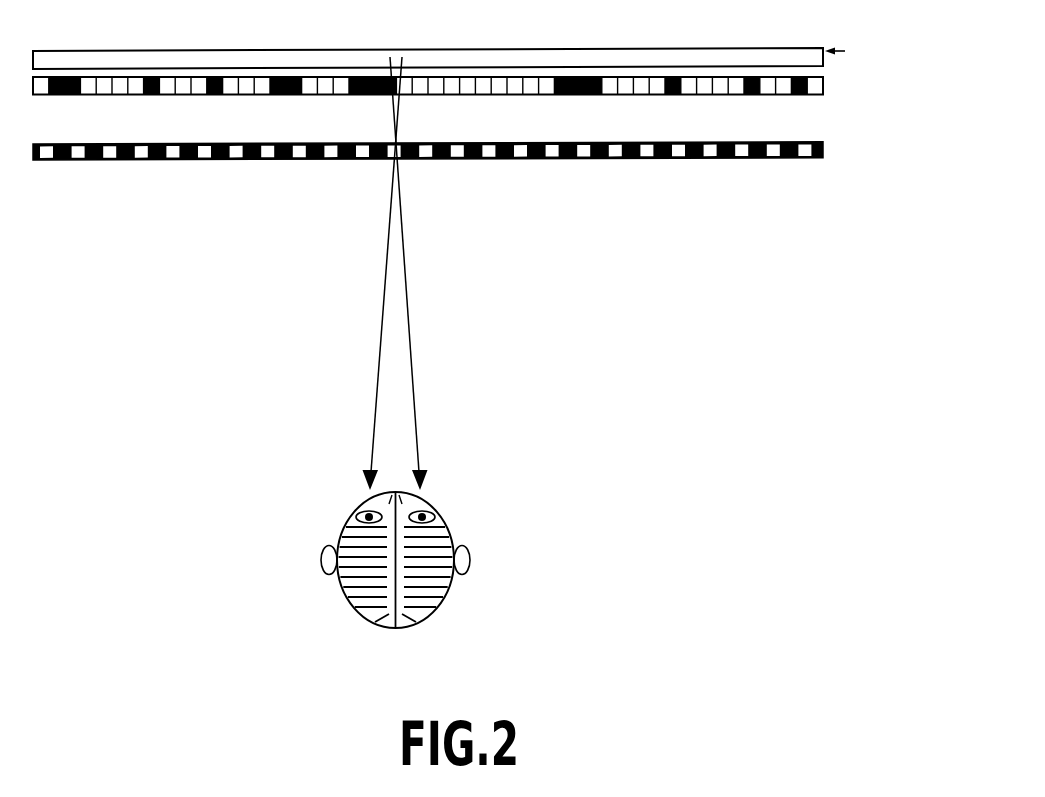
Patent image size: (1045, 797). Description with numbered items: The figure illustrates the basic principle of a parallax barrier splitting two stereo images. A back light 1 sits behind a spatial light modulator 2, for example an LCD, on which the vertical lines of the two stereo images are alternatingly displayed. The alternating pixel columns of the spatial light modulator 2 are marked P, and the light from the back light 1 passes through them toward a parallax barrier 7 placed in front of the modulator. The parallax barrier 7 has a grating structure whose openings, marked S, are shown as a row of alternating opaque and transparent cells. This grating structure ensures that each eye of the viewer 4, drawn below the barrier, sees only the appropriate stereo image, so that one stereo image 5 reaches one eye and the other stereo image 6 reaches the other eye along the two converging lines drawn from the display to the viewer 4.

The back light 1 is at (805, 60).
The spatial light modulator 2 is at (816, 82).
The viewer 4 is at (418, 560).
The stereo image 5 is at (370, 273).
The stereo image 6 is at (418, 273).
The parallax barrier 7 is at (823, 158).
The slit S is at (825, 92).
The pixel P is at (825, 143).